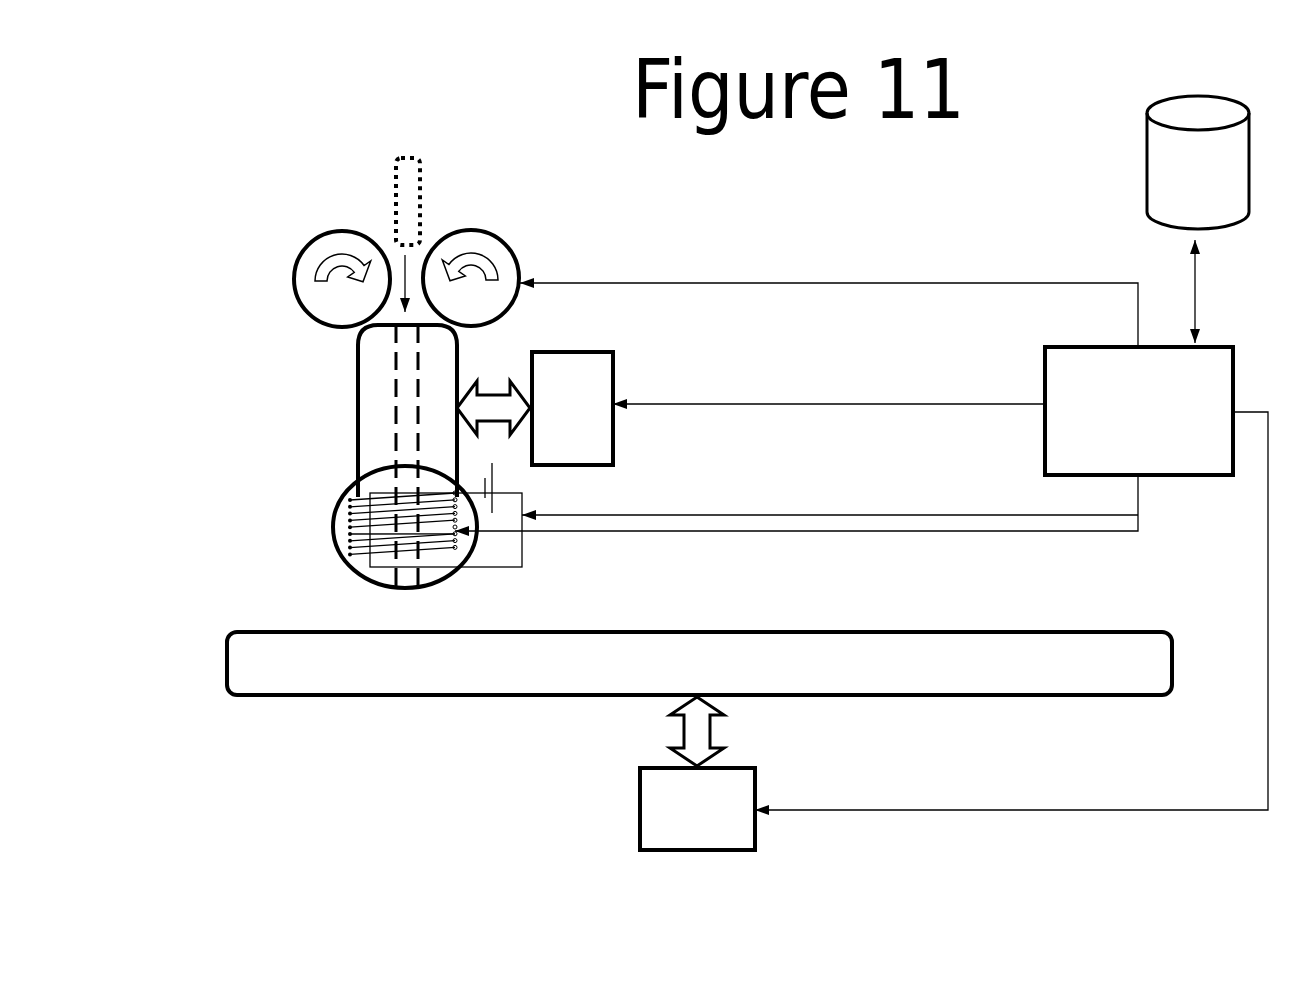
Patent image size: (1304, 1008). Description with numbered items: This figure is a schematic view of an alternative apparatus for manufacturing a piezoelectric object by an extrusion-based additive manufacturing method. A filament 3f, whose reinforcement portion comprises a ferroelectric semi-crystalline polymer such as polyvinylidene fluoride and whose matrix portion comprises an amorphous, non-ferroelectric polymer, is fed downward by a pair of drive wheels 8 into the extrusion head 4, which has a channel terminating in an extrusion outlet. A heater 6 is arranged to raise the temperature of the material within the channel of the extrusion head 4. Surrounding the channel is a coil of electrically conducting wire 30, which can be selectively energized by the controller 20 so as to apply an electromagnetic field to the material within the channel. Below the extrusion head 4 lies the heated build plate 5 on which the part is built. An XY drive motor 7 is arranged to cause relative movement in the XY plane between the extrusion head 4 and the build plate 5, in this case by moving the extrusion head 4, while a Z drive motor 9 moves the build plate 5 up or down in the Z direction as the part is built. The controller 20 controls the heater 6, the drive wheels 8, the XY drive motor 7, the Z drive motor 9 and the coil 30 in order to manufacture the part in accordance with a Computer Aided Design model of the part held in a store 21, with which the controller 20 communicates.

The filament 3f is at (407, 207).
The drive wheels 8 is at (315, 255).
The extrusion head 4 is at (337, 513).
The heater 6 is at (470, 567).
The coil of electrically conducting wire 30 is at (522, 547).
The XY drive motor 7 is at (535, 408).
The controller 20 is at (1139, 411).
The store 21 is at (1198, 162).
The heated build plate 5 is at (247, 658).
The Z drive motor 9 is at (697, 773).